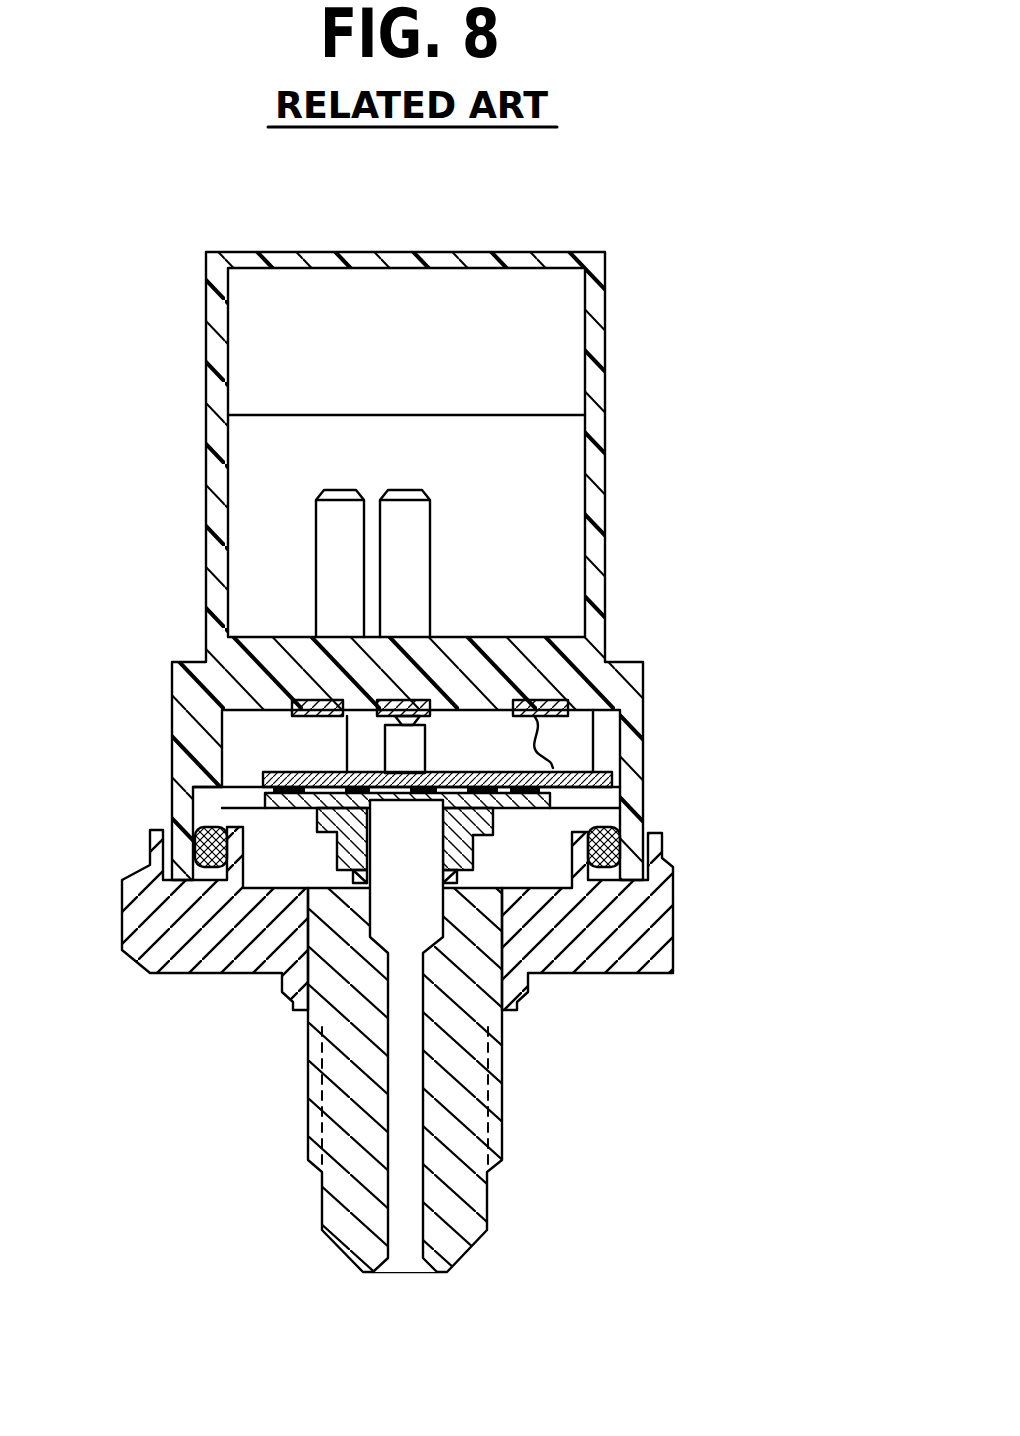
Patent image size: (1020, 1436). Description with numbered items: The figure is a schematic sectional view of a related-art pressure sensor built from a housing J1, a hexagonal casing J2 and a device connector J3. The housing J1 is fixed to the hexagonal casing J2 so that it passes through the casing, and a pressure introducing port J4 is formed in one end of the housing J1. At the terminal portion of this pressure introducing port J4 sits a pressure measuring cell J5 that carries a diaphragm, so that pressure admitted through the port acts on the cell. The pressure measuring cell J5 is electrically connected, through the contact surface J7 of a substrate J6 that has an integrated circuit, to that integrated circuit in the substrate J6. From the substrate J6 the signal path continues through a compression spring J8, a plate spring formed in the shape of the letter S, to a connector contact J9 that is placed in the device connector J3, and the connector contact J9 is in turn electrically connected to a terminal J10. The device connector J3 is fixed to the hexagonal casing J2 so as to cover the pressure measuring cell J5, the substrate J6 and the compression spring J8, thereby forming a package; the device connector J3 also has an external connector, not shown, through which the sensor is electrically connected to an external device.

The housing J1 is at (475, 1202).
The hexagonal casing J2 is at (608, 953).
The device connector J3 is at (597, 504).
The pressure introducing port J4 is at (400, 1243).
The pressure measuring cell J5 is at (332, 817).
The substrate J6 is at (582, 787).
The contact surface J7 is at (343, 772).
The compression spring J8 is at (553, 745).
The connector contact J9 is at (573, 700).
The terminal J10 is at (402, 518).